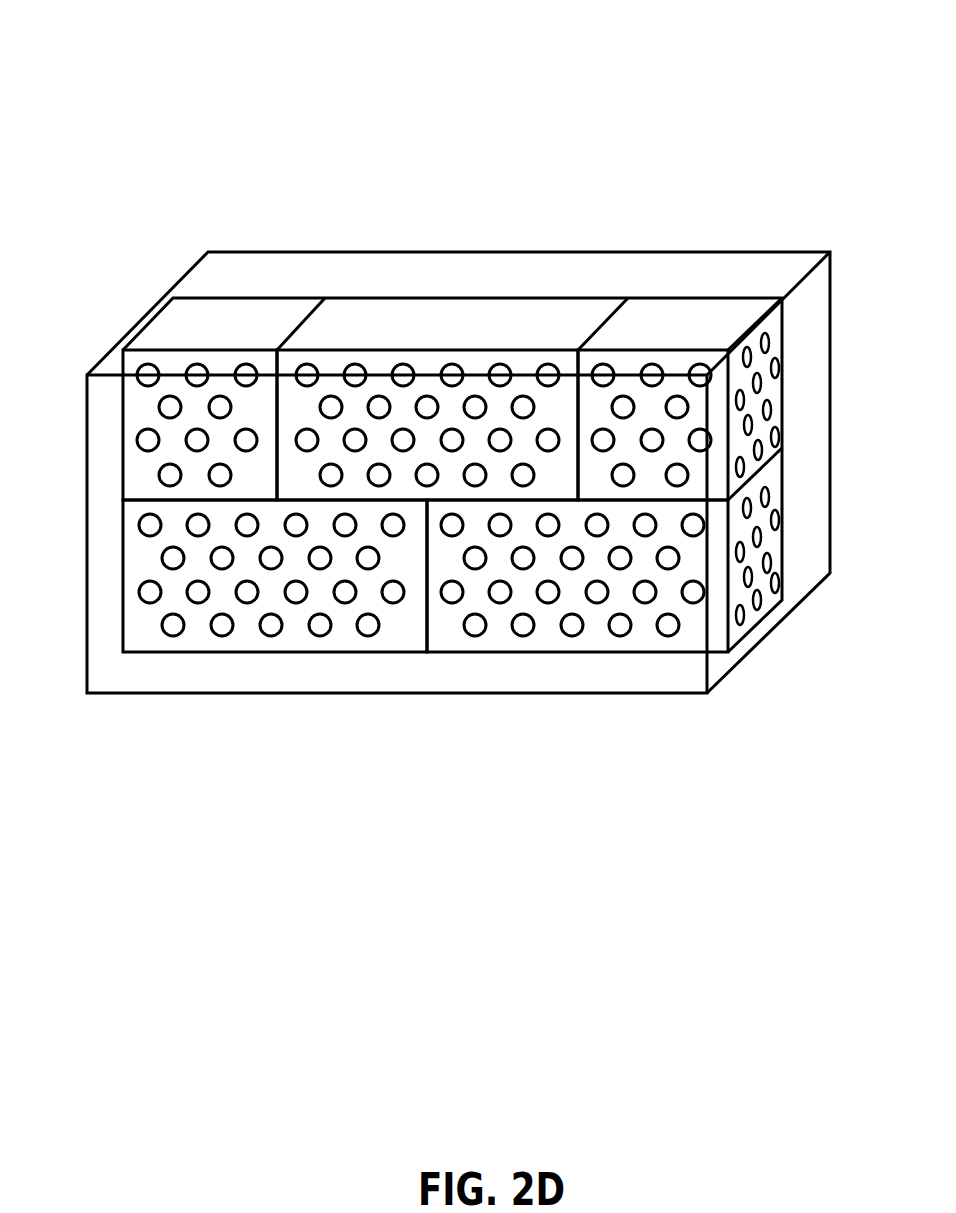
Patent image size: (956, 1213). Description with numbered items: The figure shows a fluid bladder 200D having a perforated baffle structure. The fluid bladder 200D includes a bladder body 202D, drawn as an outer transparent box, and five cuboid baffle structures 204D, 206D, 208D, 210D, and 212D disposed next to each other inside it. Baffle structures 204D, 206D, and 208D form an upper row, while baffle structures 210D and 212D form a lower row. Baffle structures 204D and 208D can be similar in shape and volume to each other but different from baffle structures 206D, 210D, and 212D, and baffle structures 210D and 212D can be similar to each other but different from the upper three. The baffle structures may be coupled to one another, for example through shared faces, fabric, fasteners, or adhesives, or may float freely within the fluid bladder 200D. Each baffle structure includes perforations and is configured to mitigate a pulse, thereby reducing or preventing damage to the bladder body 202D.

The fluid bladder 200D is at (172, 65).
The bladder body 202D is at (285, 250).
The baffle structure 204D is at (165, 325).
The baffle structure 206D is at (448, 318).
The baffle structure 208D is at (698, 308).
The baffle structure 210D is at (248, 628).
The baffle structure 212D is at (643, 620).